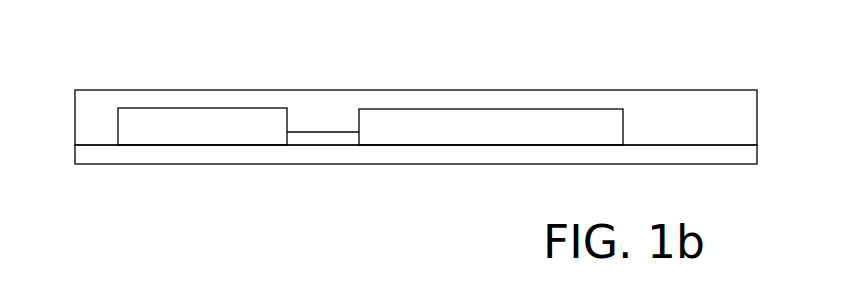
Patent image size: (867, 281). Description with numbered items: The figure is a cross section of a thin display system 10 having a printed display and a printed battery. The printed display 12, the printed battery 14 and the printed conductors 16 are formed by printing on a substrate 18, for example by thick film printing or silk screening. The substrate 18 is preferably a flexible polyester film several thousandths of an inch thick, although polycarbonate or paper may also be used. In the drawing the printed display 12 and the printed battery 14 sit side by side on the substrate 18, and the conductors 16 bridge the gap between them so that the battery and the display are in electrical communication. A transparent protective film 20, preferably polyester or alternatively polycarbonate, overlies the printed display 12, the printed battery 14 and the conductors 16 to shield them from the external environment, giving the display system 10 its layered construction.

The display system 10 is at (720, 58).
The printed display 12 is at (490, 124).
The printed battery 14 is at (185, 117).
The conductors 16 is at (320, 130).
The substrate 18 is at (132, 153).
The transparent protective film 20 is at (89, 98).